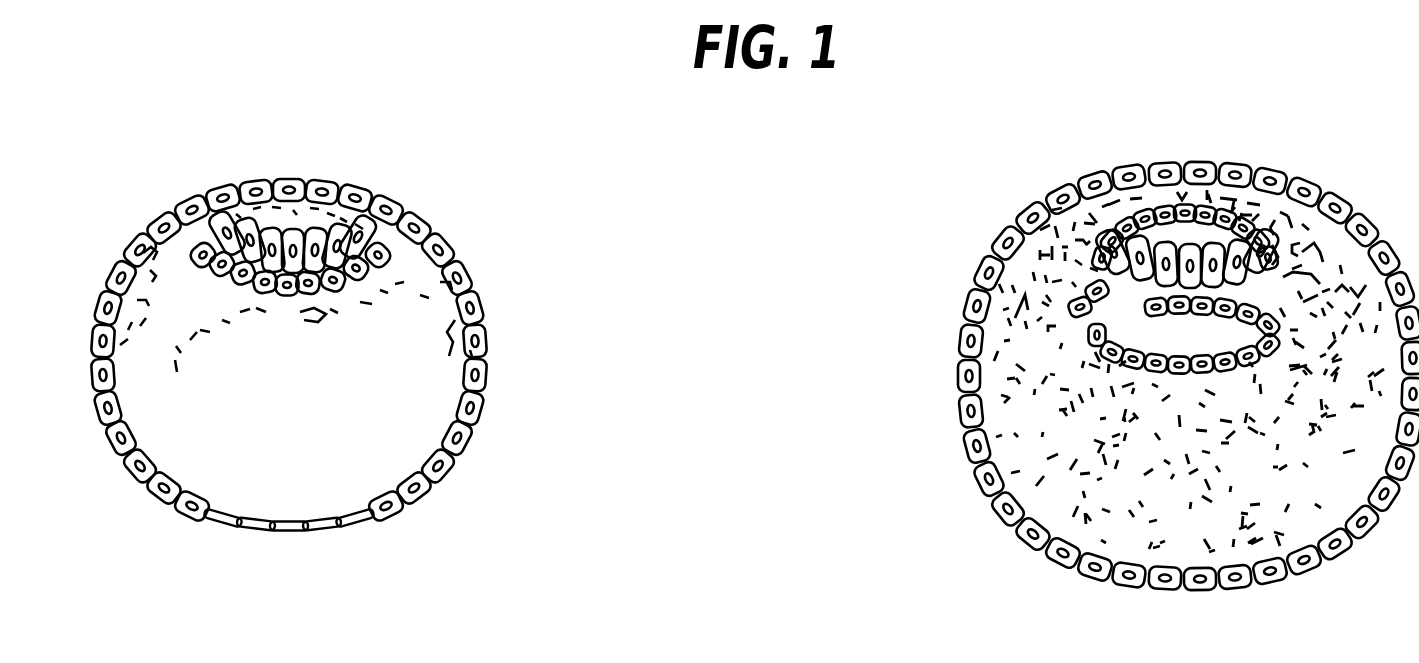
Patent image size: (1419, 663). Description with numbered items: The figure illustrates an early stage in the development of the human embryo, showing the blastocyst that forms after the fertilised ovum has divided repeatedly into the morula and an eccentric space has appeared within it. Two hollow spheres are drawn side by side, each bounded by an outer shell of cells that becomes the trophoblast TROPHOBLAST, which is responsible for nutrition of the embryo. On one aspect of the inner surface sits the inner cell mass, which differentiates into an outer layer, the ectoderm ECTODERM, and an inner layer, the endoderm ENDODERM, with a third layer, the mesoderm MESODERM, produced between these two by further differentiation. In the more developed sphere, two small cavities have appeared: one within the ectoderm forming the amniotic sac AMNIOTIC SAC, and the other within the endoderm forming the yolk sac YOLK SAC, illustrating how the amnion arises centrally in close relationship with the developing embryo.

The ectoderm ECTODERM is at (352, 222).
The mesoderm MESODERM is at (1120, 268).
The endoderm ENDODERM is at (333, 296).
The trophoblast TROPHOBLAST is at (967, 353).
The amniotic sac AMNIOTIC SAC is at (1163, 270).
The yolk sac YOLK SAC is at (1153, 333).